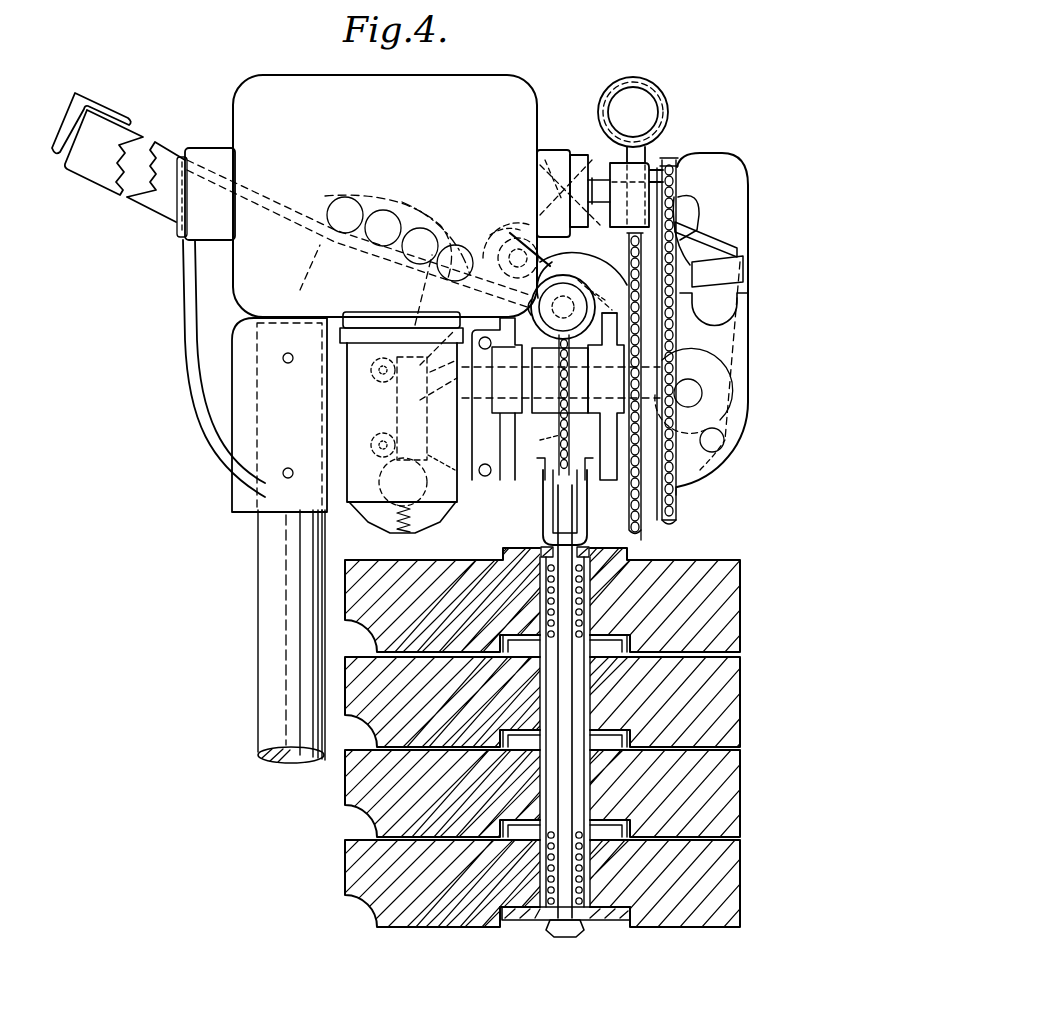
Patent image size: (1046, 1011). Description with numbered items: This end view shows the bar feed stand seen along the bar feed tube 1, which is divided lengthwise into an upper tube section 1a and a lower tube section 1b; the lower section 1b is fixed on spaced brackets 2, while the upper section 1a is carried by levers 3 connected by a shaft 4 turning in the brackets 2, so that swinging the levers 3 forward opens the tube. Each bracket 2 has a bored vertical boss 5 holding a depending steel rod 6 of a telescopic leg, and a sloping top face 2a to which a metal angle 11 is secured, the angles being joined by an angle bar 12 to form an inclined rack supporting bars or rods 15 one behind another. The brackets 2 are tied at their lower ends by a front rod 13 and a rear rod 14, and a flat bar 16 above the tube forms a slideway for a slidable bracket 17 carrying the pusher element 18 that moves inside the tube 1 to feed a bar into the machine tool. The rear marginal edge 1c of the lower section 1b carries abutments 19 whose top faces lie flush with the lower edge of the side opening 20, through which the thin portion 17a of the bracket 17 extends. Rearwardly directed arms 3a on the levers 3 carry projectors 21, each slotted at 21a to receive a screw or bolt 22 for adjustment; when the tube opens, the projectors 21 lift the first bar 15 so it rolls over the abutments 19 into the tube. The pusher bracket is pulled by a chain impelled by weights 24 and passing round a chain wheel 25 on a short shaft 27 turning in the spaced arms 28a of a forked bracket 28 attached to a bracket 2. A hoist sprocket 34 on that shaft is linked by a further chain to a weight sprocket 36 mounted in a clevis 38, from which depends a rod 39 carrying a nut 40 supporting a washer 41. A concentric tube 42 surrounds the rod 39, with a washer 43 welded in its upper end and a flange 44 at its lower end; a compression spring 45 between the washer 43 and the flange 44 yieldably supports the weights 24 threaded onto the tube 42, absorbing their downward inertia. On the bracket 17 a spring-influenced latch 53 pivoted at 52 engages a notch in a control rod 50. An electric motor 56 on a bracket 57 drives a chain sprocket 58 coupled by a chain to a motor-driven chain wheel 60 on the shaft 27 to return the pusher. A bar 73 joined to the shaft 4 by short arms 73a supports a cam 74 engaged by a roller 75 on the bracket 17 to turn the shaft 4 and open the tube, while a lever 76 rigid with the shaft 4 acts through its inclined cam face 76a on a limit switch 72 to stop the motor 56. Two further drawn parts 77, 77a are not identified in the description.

The bar feed tube 1 is at (561, 307).
The upper tube section 1a is at (594, 285).
The lower tube section 1b is at (548, 330).
The rear marginal edge 1c is at (518, 269).
The brackets 2 is at (729, 420).
The top faces 2a is at (275, 200).
The levers 3 is at (602, 292).
The rearwardly directed arms 3a is at (441, 463).
The shaft 4 is at (697, 384).
The vertical boss 5 is at (232, 359).
The depending steel rod 6 is at (258, 572).
The metal angles 11 is at (167, 203).
The angle bar 12 is at (118, 116).
The front rod 13 is at (545, 528).
The rear rod 14 is at (395, 505).
The bars or rods 15 is at (420, 228).
The bar of flat section 16 is at (668, 160).
The slidable bracket 17 is at (583, 257).
The thin portion 17a is at (566, 273).
The pusher element 18 is at (596, 285).
The abutments 19 is at (506, 255).
The side opening 20 is at (506, 231).
The projectors 21 is at (418, 295).
The slot 21a is at (418, 395).
The screw or bolt 22 is at (438, 386).
The weights 24 is at (360, 812).
The chain wheel 25 is at (645, 535).
The short shaft 27 is at (680, 414).
The forked bracket 28 is at (628, 500).
The spaced arms 28a is at (660, 425).
The hoist sprocket 34 is at (561, 380).
The weight sprocket 36 is at (548, 482).
The clevis 38 is at (540, 510).
The rod 39 is at (592, 925).
The nut 40 is at (562, 930).
The washer 41 is at (546, 925).
The concentric tube 42 is at (626, 922).
The washer 43 is at (590, 548).
The flange 44 is at (508, 922).
The compression spring 45 is at (540, 580).
The control rod 50 is at (498, 223).
The pivot 52 is at (540, 208).
The spring-influenced latch 53 is at (540, 188).
The electric motor 56 is at (385, 196).
The bracket 57 is at (355, 398).
The chain sprocket 58 is at (672, 172).
The motor driven chain wheel 60 is at (674, 510).
The limit switch 72 is at (397, 420).
The cam support bar 73 is at (717, 271).
The short arms 73a is at (729, 459).
The cam 74 is at (715, 247).
The roller 75 is at (692, 215).
The lever 76 is at (680, 490).
The inclined cam face 76a is at (541, 439).
The eye stem 77 is at (618, 148).
The eye ring 77a is at (645, 78).